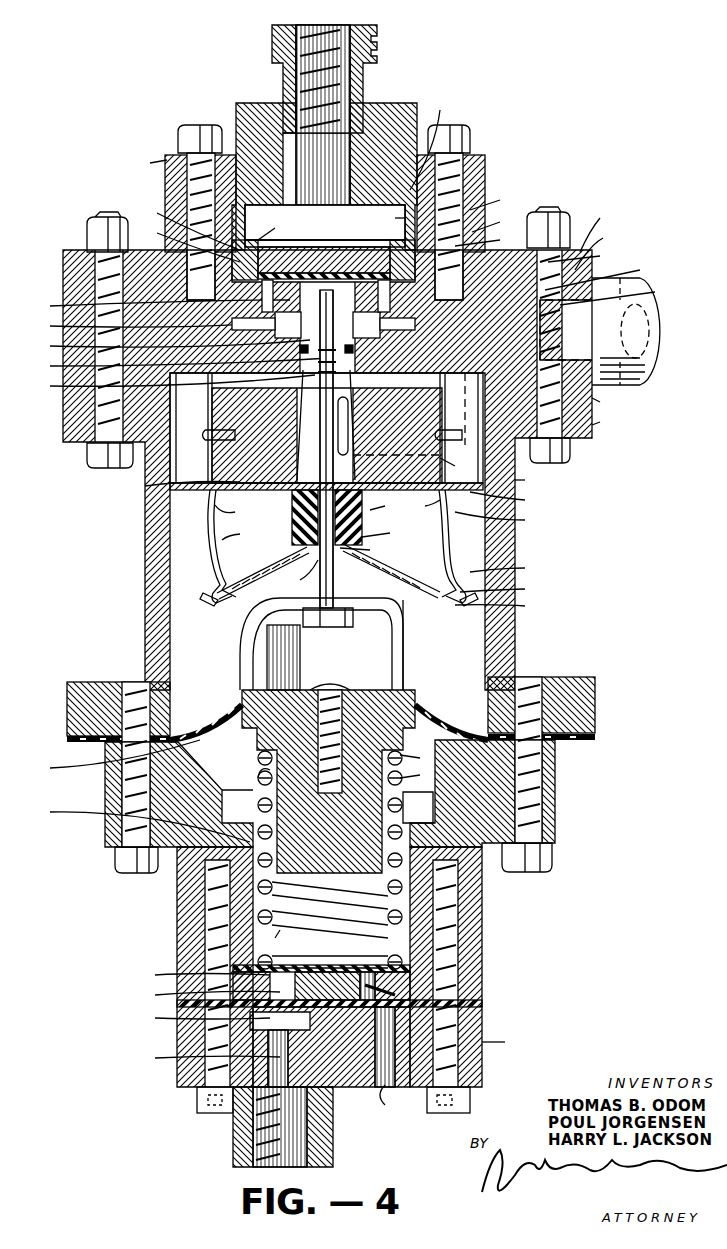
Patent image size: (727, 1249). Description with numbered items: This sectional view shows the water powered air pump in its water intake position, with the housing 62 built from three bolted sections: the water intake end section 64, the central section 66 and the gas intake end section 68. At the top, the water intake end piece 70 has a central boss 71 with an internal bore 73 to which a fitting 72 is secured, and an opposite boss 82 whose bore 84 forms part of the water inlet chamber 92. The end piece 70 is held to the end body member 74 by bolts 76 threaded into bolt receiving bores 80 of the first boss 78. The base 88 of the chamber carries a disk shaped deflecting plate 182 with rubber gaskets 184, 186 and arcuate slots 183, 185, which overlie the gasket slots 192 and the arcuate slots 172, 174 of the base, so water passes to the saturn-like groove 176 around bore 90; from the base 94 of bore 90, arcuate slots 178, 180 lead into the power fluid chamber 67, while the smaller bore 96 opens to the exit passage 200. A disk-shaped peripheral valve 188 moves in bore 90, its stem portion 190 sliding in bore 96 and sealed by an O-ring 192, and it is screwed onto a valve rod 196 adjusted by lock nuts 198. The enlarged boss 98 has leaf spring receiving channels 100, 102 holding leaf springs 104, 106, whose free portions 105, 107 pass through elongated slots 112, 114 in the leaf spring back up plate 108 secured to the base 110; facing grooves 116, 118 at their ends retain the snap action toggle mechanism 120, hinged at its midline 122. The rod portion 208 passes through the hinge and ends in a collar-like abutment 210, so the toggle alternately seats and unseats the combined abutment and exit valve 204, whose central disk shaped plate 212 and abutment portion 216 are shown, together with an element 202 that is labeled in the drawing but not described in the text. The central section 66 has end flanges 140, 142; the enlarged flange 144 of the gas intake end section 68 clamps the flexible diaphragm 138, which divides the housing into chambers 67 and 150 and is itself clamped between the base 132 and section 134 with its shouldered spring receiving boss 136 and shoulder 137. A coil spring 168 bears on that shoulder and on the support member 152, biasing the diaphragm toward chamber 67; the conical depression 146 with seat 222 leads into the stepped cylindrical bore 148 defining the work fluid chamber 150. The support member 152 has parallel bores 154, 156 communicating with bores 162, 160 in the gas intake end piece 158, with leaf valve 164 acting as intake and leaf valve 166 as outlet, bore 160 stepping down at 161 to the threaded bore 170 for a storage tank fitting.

The housing 62 is at (515, 546).
The water intake end section 64 is at (545, 205).
The central section 66 is at (507, 566).
The power fluid chamber 67 is at (425, 645).
The gas intake end section 68 is at (482, 930).
The water intake end piece 70 is at (485, 178).
The boss 71 is at (405, 180).
The fitting 72 is at (377, 30).
The internal bore 73 is at (345, 155).
The end body member 74 is at (599, 226).
The bolts 76 is at (200, 123).
The first boss 78 is at (494, 200).
The bolt receiving bores 80 is at (324, 191).
The boss 82 is at (391, 219).
The bore 84 is at (273, 224).
The base 88 is at (65, 287).
The bore 90 is at (598, 247).
The water inlet chamber 92 is at (325, 222).
The base 94 is at (168, 344).
The bore 96 is at (529, 478).
The enlarged boss 98 is at (326, 430).
The leaf spring receiving channel 100 is at (460, 463).
The leaf spring receiving channel 102 is at (205, 416).
The leaf spring 104 is at (448, 556).
The free portion 105 is at (237, 531).
The leaf spring 106 is at (198, 520).
The free portion 107 is at (506, 587).
The leaf spring back up plate 108 is at (510, 498).
The base 110 is at (170, 483).
The elongated slot 112 is at (503, 518).
The elongated slot 114 is at (234, 509).
The groove 116 is at (240, 558).
The groove 118 is at (503, 604).
The spring loaded snap action toggle mechanism 120 is at (405, 585).
The hinge 122 is at (293, 578).
The base 132 is at (435, 693).
The section 134 is at (422, 753).
The spring receiving boss 136 is at (422, 771).
The shoulder 137 is at (247, 775).
The diaphragm 138 is at (222, 712).
The end flange 140 is at (609, 419).
The end flange 142 is at (595, 688).
The enlarged flange 144 is at (555, 775).
The conical diaphragm receiving depression 146 is at (170, 775).
The stepped cylindrical bore 148 is at (147, 821).
The work fluid chamber 150 is at (310, 857).
The support member 152 is at (400, 1000).
The bore 154 is at (410, 968).
The bore 156 is at (195, 973).
The gas intake end piece 158 is at (506, 1040).
The bore 160 is at (195, 1016).
The step 161 is at (200, 1056).
The bore 162 is at (395, 1100).
The leaf valve 164 is at (395, 1020).
The leaf valve 166 is at (200, 993).
The coil spring 168 is at (266, 937).
The threaded bore 170 is at (300, 1160).
The arcuate slot 172 is at (587, 254).
The arcuate slot 174 is at (154, 304).
The saturn-like groove 176 is at (159, 324).
The arcuate slot 178 is at (609, 399).
The arcuate slot 180 is at (174, 364).
The deflecting plate 182 is at (323, 260).
The arcuate slot 183 is at (490, 239).
The rubber gasket 184 is at (433, 139).
The arcuate slot 185 is at (184, 223).
The rubber gasket 186 is at (184, 239).
The peripheral valve 188 is at (605, 273).
The stem portion 190 is at (621, 292).
The O-ring 192 is at (166, 384).
The valve rod 196 is at (305, 535).
The lock nuts 198 is at (285, 520).
The exit passage 200 is at (662, 318).
The seat 202 is at (430, 509).
The combined abutment and exit valve 204 is at (368, 549).
The portion 208 is at (333, 580).
The collar-like abutment 210 is at (267, 640).
The central disk shaped plate 212 is at (385, 509).
The abutment portion 216 is at (389, 530).
The seat 222 is at (122, 758).